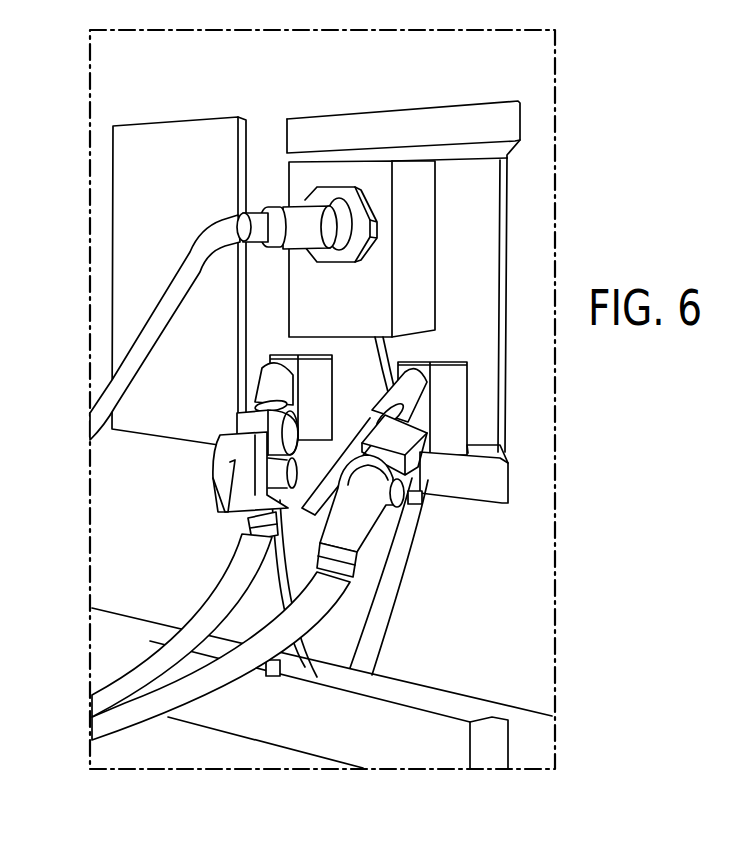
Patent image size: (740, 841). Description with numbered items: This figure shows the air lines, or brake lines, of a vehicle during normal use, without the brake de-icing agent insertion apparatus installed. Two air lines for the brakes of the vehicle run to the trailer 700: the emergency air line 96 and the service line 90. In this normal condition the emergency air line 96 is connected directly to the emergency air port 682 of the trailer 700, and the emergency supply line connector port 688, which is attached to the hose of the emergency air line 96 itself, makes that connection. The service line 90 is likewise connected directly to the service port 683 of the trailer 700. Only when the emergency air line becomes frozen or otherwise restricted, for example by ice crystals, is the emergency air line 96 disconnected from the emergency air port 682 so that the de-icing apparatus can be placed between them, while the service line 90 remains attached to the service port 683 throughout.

The trailer 700 is at (538, 70).
The emergency air port 682 is at (407, 443).
The service port 683 is at (233, 450).
The emergency supply line connector port 688 is at (360, 527).
The service line 90 is at (217, 607).
The emergency air line 96 is at (143, 712).